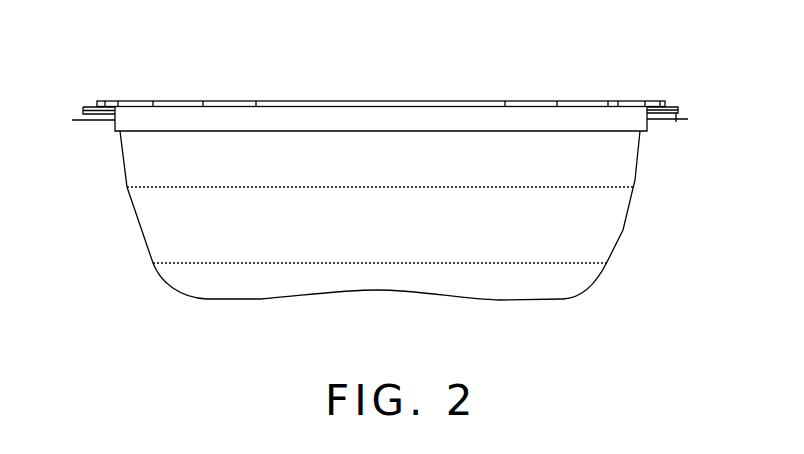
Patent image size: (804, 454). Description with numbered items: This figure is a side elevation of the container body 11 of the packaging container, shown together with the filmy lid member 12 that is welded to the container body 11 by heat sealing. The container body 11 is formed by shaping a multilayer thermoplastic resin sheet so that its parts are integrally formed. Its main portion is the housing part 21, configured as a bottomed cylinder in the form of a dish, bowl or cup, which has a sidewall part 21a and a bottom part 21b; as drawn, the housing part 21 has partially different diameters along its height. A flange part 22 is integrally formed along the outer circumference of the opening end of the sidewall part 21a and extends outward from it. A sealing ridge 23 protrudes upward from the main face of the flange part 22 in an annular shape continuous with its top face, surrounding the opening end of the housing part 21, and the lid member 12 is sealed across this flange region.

The container body 11 is at (432, 251).
The lid member 12 is at (618, 102).
The housing part 21 is at (416, 251).
The sidewall part 21a is at (608, 192).
The bottom part 21b is at (537, 300).
The flange part 22 is at (677, 121).
The sealing ridge 23 is at (662, 102).